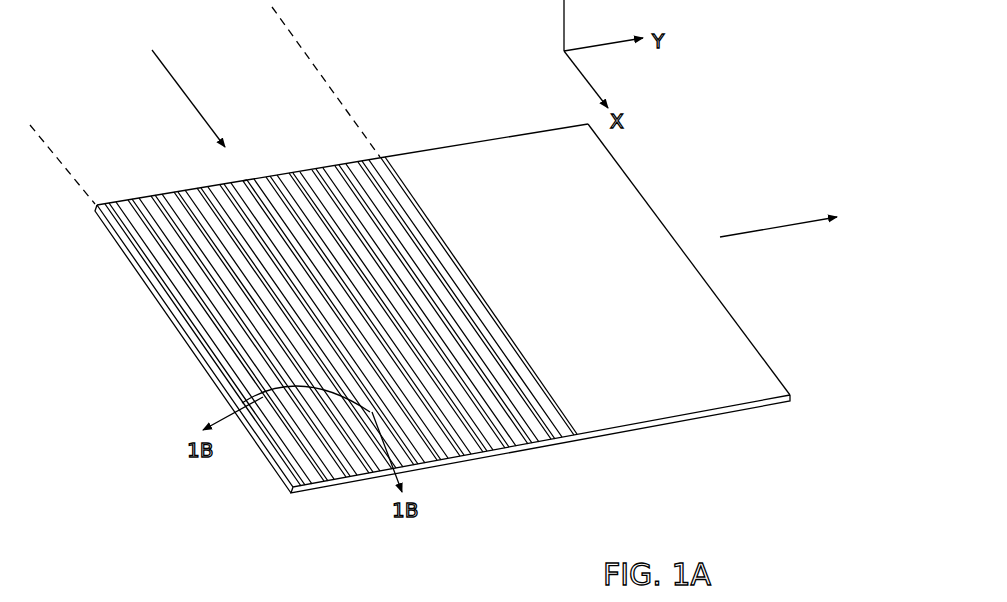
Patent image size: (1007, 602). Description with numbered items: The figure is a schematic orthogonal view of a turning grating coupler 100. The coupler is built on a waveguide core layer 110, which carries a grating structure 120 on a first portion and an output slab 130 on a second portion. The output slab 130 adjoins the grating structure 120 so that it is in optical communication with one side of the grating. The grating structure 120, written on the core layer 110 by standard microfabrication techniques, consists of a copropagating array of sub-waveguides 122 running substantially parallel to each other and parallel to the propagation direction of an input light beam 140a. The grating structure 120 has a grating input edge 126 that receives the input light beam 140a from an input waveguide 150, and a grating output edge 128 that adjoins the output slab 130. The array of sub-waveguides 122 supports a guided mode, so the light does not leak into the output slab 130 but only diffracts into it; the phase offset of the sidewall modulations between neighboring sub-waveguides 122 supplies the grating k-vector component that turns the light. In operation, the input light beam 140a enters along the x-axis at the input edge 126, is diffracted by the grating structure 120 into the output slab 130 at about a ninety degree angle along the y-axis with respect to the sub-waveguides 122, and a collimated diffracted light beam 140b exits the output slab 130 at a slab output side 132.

The turning grating coupler 100 is at (454, 297).
The waveguide core layer 110 is at (610, 433).
The grating structure 120 is at (337, 325).
The sub-waveguides 122 is at (158, 205).
The grating input edge 126 is at (242, 182).
The grating output edge 128 is at (448, 237).
The output slab 130 is at (725, 333).
The slab output side 132 is at (655, 213).
The input light beam 140a is at (182, 88).
The diffracted light beam 140b is at (783, 228).
The input waveguide 150 is at (290, 33).